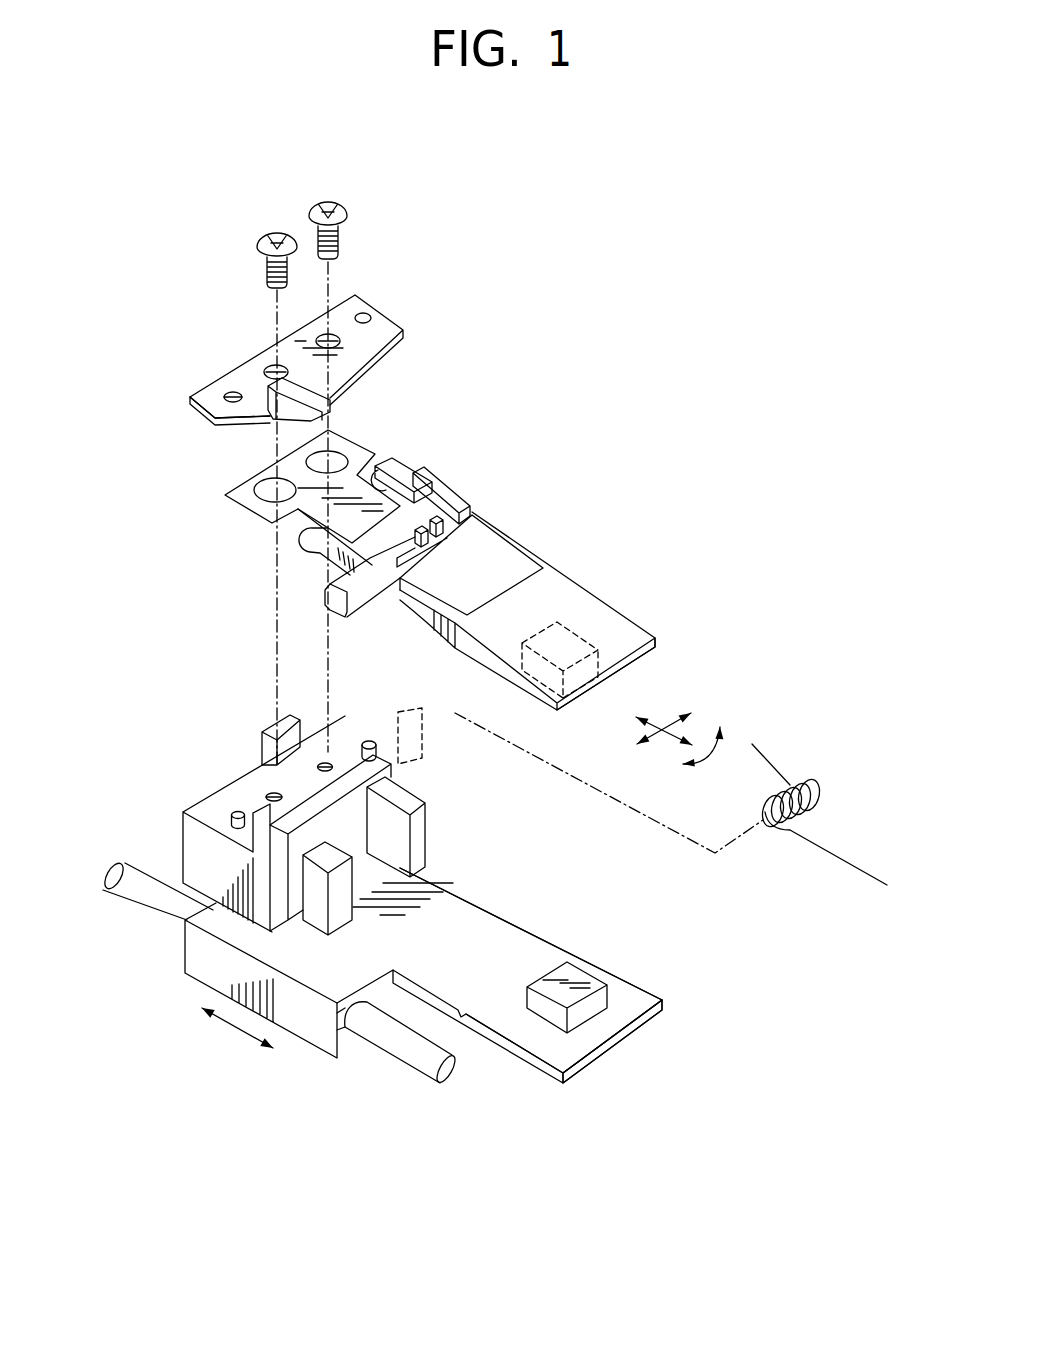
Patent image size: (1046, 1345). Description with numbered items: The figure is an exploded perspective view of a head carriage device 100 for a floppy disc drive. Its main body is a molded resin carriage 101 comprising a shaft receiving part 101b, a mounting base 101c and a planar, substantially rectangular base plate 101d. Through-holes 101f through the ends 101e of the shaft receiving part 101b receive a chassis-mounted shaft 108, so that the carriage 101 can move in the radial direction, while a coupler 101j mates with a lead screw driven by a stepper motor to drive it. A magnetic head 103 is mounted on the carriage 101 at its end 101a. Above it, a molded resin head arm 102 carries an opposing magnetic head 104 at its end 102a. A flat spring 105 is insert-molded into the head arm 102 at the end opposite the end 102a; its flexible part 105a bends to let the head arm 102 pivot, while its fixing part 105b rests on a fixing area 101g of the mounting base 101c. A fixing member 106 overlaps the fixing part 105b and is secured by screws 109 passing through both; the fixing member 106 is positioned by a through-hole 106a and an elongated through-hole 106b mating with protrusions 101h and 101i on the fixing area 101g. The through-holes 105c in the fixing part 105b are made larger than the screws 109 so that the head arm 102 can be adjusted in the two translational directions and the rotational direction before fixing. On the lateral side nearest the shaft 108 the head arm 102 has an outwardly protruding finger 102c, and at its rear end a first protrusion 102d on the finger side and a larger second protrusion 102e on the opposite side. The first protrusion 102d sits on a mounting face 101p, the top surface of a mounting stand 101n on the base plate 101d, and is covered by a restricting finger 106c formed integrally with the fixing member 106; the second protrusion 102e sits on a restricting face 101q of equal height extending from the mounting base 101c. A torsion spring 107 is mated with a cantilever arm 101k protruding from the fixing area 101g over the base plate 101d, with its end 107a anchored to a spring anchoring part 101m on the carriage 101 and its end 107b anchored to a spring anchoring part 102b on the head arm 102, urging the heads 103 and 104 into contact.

The head carriage device 100 is at (668, 500).
The carriage 101 is at (478, 890).
The end of carriage 101a is at (632, 998).
The shaft receiving part 101b is at (210, 963).
The mounting base 101c is at (203, 853).
The base plate 101d is at (497, 957).
The ends of shaft receiving part 101e is at (187, 957).
The through-holes 101f is at (363, 1040).
The fixing area 101g is at (203, 800).
The protrusion 101h is at (369, 738).
The protrusion 101i is at (213, 798).
The coupler 101j is at (400, 712).
The cantilever arm 101k is at (239, 810).
The spring anchoring part 101m is at (270, 723).
The mounting stand 101n is at (317, 908).
The mounting face 101p is at (333, 850).
The restricting face 101q is at (403, 802).
The head arm 102 is at (587, 583).
The end of head arm 102a is at (635, 660).
The spring anchoring part 102b is at (458, 540).
The finger 102c is at (328, 584).
The first protrusion 102d is at (306, 537).
The second protrusion 102e is at (400, 465).
The magnetic head 103 is at (577, 977).
The magnetic head 104 is at (574, 637).
The flat spring 105 is at (365, 453).
The flexible part 105a is at (392, 496).
The fixing part 105b is at (268, 470).
The through-holes 105c is at (335, 452).
The fixing member 106 is at (393, 322).
The through-hole 106a is at (363, 313).
The elongated through-hole 106b is at (212, 386).
The restricting finger 106c is at (233, 392).
The torsion spring 107 is at (817, 787).
The end of torsion spring 107a is at (760, 752).
The end of torsion spring 107b is at (858, 870).
The shaft 108 is at (135, 898).
The screws 109 is at (324, 204).